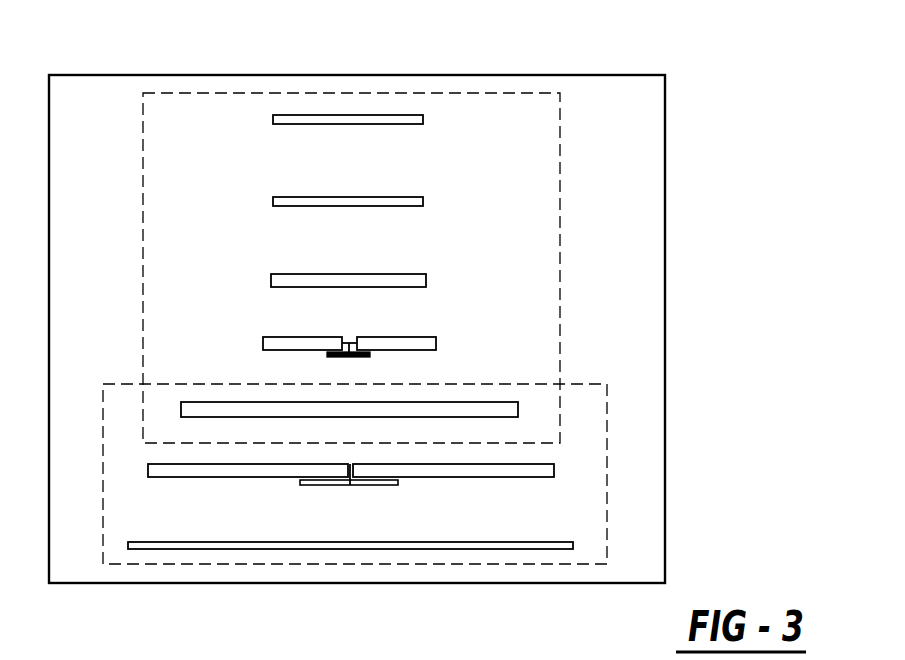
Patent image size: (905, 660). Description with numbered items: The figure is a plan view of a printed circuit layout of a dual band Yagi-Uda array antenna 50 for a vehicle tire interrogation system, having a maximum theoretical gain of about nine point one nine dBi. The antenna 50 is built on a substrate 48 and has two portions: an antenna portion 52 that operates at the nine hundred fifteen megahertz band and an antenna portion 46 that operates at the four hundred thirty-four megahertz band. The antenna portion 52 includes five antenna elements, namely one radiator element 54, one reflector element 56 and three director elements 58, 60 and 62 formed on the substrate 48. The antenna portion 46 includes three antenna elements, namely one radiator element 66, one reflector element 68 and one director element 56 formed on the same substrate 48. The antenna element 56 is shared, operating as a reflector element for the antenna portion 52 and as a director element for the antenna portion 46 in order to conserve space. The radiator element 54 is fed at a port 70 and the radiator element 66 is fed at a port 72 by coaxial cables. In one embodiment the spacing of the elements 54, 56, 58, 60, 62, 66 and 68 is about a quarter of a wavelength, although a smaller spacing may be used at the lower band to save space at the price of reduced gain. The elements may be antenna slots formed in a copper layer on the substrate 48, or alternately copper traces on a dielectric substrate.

The antenna portion 46 is at (607, 412).
The substrate 48 is at (628, 133).
The dual band Yagi-Uda array antenna 50 is at (720, 259).
The antenna portion 52 is at (188, 93).
The radiator element 54 is at (400, 337).
The reflector element 56 is at (497, 402).
The director element 58 is at (403, 272).
The director element 60 is at (307, 206).
The director element 62 is at (317, 125).
The radiator element 66 is at (554, 467).
The reflector element 68 is at (573, 543).
The port 70 is at (337, 354).
The port 72 is at (375, 486).